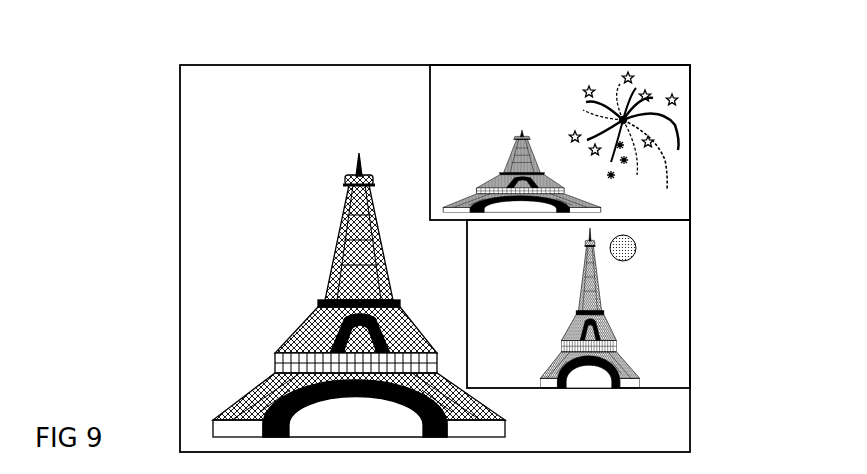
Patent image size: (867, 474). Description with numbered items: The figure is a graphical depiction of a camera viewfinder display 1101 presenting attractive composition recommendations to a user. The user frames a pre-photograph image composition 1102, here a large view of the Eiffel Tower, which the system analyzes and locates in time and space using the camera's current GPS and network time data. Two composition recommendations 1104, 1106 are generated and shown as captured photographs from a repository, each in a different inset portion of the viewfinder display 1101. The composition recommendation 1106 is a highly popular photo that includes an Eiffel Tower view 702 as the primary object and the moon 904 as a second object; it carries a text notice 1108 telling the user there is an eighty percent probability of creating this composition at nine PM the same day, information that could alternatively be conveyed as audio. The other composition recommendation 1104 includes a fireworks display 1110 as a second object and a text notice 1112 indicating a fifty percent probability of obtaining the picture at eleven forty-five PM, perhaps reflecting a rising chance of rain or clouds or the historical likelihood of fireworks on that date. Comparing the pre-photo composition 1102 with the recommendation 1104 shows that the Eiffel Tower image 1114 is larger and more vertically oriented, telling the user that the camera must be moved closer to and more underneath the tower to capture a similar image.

The camera viewfinder display 1101 is at (180, 343).
The pre-photograph image composition 1102 is at (210, 110).
The composition recommendation 1104 is at (697, 142).
The composition recommendation 1106 is at (695, 268).
The text notice 1108 is at (480, 242).
The fireworks display 1110 is at (657, 80).
The text notice 1112 is at (480, 75).
The Eiffel Tower image 1114 is at (522, 171).
The moon 904 is at (620, 258).
The Eiffel Tower view 702 is at (578, 333).